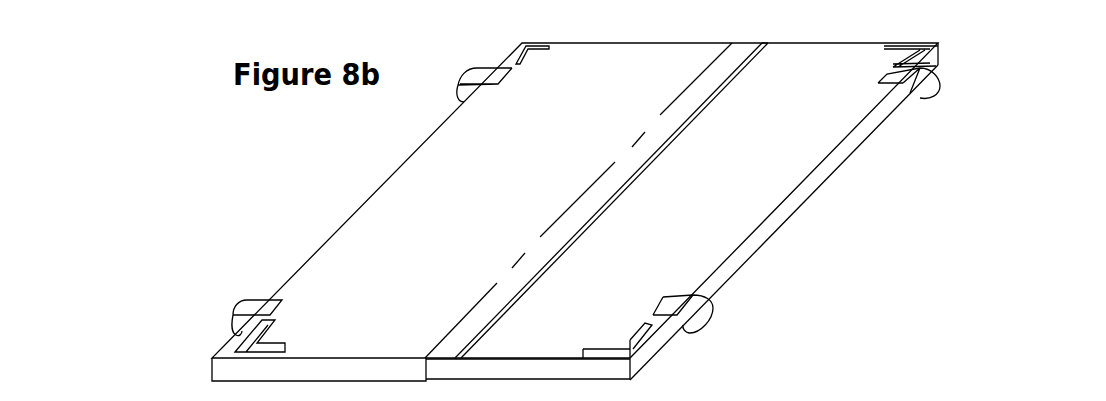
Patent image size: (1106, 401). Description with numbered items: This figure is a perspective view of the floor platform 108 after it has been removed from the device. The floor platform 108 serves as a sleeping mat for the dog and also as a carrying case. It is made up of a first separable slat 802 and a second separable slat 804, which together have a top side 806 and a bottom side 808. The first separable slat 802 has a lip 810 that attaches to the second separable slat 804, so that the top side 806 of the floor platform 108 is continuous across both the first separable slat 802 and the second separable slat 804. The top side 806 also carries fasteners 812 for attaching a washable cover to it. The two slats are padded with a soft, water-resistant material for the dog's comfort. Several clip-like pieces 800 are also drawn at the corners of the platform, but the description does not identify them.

The floor platform 108 is at (375, 158).
The spring clip 800 is at (485, 72).
The first separable slat 802 is at (369, 383).
The second separable slat 804 is at (574, 381).
The top side 806 is at (511, 189).
The bottom side 808 is at (818, 192).
The lip 810 is at (463, 356).
The fasteners 812 is at (526, 52).